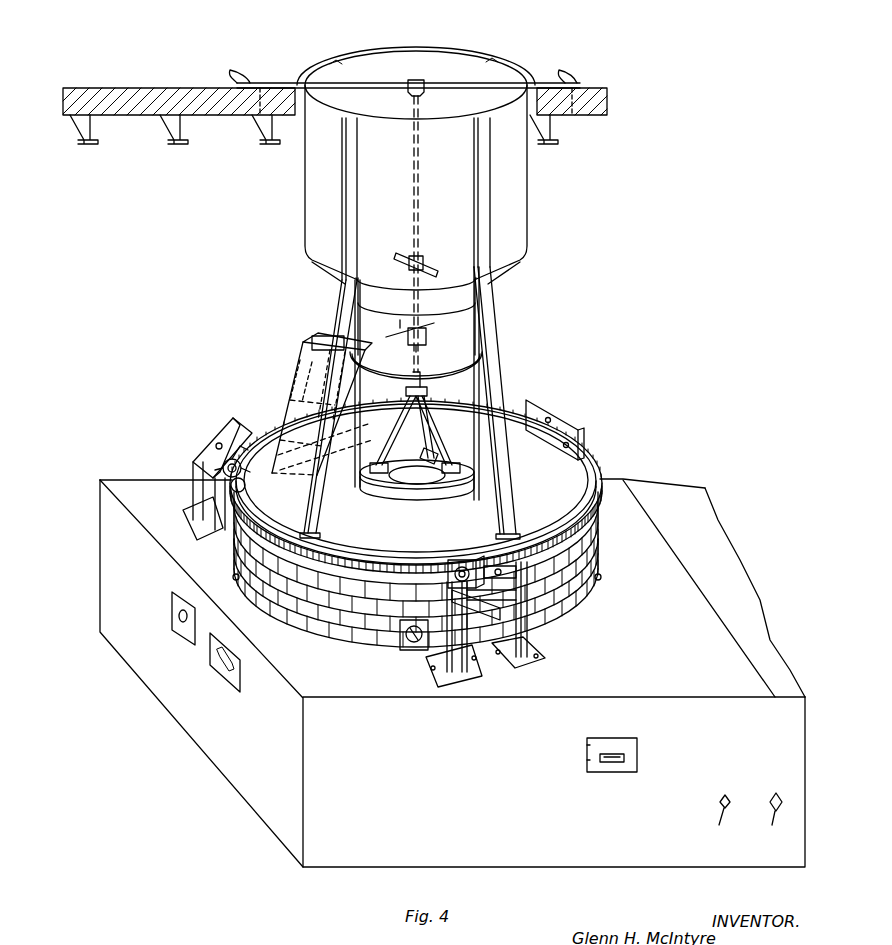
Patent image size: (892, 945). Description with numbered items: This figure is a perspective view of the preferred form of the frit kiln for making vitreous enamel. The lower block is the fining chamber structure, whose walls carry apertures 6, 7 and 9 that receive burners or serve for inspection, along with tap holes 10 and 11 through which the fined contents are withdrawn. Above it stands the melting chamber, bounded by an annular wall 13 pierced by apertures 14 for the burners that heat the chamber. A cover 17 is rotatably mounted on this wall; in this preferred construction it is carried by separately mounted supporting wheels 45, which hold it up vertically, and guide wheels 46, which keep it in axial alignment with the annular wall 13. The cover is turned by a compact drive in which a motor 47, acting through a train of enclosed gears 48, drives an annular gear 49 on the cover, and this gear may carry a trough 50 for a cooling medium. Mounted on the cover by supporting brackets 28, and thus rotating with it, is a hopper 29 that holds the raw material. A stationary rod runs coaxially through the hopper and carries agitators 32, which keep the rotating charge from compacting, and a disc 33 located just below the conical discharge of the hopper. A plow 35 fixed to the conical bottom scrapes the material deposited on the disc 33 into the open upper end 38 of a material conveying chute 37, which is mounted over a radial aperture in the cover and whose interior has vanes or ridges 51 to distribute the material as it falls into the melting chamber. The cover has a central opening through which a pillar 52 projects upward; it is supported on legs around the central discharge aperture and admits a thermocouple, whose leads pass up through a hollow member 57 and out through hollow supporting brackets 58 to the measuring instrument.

The aperture 6 is at (180, 627).
The aperture 7 is at (212, 670).
The aperture 9 is at (626, 750).
The tap hole 10 is at (728, 819).
The tap hole 11 is at (779, 818).
The annular wall 13 is at (543, 584).
The apertures 14 is at (233, 574).
The cover 17 is at (572, 440).
The supporting brackets 28 is at (337, 317).
The hopper 29 is at (513, 192).
The agitators 32 is at (433, 262).
The disc 33 is at (452, 352).
The plow 35 is at (333, 298).
The material conveying chute 37 is at (289, 415).
The upper end of chute 38 is at (317, 334).
The supporting wheels 45 is at (471, 560).
The guide wheels 46 is at (493, 608).
The motor 47 is at (202, 453).
The train of enclosed gears 48 is at (233, 432).
The annular gear 49 is at (538, 478).
The trough 50 is at (392, 556).
The vanes or ridges 51 is at (315, 372).
The pillar 52 is at (425, 485).
The hollow member 57 is at (422, 184).
The hollow supporting brackets 58 is at (552, 82).